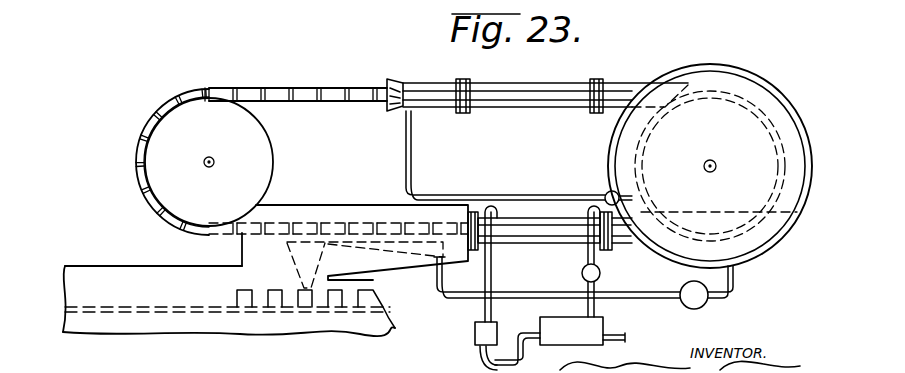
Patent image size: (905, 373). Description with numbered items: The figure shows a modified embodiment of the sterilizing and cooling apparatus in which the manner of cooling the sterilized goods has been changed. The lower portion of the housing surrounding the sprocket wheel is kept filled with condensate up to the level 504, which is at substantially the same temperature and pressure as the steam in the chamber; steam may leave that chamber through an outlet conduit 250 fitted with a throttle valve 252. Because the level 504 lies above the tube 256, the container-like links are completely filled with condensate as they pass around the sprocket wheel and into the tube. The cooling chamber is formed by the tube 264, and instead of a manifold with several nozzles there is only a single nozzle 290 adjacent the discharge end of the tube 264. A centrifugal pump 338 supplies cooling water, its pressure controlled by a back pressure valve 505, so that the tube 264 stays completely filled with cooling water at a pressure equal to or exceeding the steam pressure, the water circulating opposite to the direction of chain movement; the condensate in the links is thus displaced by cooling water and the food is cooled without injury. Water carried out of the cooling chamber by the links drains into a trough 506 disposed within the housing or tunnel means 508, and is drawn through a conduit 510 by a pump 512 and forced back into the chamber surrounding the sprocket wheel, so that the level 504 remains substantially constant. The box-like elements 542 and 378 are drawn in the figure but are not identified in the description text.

The condensate level 504 is at (775, 206).
The housing or tunnel means 508 is at (318, 208).
The trough 506 is at (414, 250).
The tube 264 is at (532, 219).
The nozzle 290 is at (493, 208).
The outlet conduit 250 is at (581, 203).
The throttle valve 252 is at (620, 195).
The back pressure valve 505 is at (582, 270).
The tube 256 is at (630, 243).
The conduit 510 is at (640, 299).
The pump 512 is at (705, 306).
The valve box 542 is at (475, 328).
The control box 378 is at (552, 320).
The centrifugal pump 338 is at (482, 362).